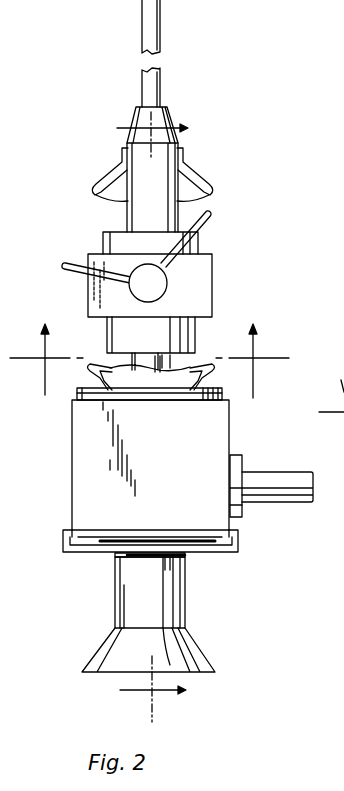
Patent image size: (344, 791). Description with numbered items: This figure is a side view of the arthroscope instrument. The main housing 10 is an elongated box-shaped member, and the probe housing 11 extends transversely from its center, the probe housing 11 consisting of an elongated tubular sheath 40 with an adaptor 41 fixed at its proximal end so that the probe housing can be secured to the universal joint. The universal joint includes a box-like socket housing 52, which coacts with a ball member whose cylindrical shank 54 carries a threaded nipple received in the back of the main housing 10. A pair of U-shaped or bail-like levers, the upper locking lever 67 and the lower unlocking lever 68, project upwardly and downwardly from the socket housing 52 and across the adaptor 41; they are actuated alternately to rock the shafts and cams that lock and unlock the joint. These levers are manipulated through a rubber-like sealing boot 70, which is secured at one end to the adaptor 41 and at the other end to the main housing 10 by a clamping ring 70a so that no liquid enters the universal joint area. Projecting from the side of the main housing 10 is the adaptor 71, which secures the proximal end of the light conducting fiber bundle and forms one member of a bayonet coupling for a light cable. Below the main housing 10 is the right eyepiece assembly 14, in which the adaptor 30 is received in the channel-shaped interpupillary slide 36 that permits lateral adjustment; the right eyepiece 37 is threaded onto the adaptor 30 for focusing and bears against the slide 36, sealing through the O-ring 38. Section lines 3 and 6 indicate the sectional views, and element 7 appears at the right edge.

The elongated tubular sheath 40 is at (145, 11).
The probe housing 11 is at (161, 72).
The section line 3- 3 is at (143, 417).
The adaptor 41 is at (138, 207).
The sealing boot 70 is at (194, 183).
The unlocking lever 68 is at (209, 216).
The locking lever 67 is at (70, 284).
The socket housing 52 is at (207, 278).
The cylindrical shank 54 is at (187, 365).
The section line 6- 6 is at (149, 361).
The clamping ring 70a is at (163, 392).
The main housing 10 is at (72, 441).
The adaptor 71 is at (283, 480).
The element 7 is at (331, 423).
The interpupillary slide 36 is at (238, 548).
The adaptor 30 is at (138, 555).
The sealing O-ring 38 is at (187, 556).
The right eyepiece assembly 14 is at (113, 598).
The right eyepiece 37 is at (172, 600).